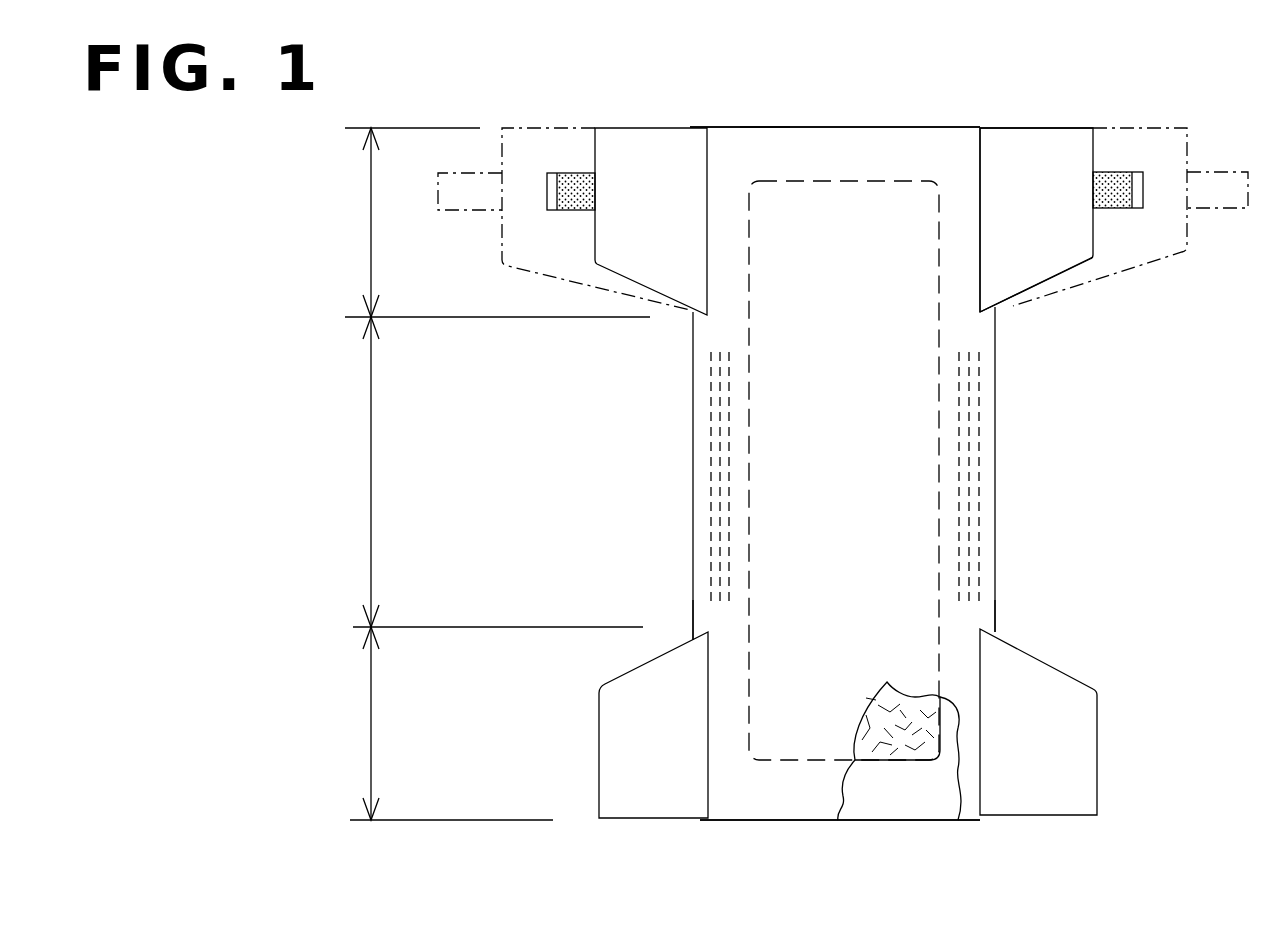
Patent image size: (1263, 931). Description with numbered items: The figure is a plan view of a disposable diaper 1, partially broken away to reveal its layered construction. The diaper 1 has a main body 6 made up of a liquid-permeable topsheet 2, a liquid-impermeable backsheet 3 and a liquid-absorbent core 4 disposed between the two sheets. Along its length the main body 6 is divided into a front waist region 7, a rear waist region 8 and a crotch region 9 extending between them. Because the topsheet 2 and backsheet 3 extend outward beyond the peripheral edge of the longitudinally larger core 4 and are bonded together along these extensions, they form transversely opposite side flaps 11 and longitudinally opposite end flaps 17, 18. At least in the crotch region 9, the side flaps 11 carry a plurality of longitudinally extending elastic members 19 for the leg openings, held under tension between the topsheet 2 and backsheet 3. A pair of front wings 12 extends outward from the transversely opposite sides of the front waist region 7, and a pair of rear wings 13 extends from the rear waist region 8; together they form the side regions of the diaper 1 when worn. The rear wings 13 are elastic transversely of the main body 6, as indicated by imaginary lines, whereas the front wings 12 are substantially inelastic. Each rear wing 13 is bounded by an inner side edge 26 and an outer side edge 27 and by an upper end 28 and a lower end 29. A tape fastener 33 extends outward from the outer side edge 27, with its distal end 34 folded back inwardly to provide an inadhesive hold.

The diaper 1 is at (948, 68).
The liquid-permeable topsheet 2 is at (972, 793).
The liquid-impermeable backsheet 3 is at (858, 810).
The liquid-absorbent core 4 is at (890, 760).
The main body 6 is at (866, 118).
The front waist region 7 is at (448, 723).
The rear waist region 8 is at (493, 222).
The crotch region 9 is at (491, 472).
The side flaps 11 is at (713, 615).
The front wings 12 is at (645, 832).
The rear wings 13 is at (648, 118).
The end flap 17 is at (733, 812).
The end flap 18 is at (762, 142).
The elastic members 19 is at (980, 392).
The inner side edge 26 is at (983, 250).
The outer side edge 27 is at (1090, 230).
The upper end 28 is at (1018, 132).
The lower end 29 is at (1055, 270).
The tape fastener 33 is at (578, 180).
The distal end 34 is at (551, 212).